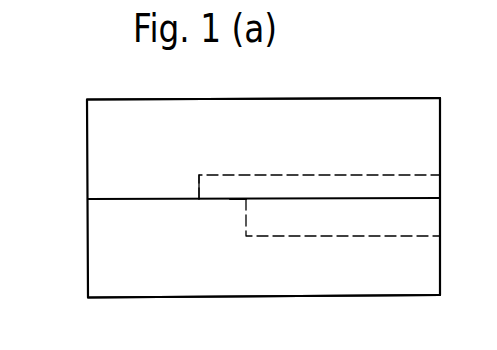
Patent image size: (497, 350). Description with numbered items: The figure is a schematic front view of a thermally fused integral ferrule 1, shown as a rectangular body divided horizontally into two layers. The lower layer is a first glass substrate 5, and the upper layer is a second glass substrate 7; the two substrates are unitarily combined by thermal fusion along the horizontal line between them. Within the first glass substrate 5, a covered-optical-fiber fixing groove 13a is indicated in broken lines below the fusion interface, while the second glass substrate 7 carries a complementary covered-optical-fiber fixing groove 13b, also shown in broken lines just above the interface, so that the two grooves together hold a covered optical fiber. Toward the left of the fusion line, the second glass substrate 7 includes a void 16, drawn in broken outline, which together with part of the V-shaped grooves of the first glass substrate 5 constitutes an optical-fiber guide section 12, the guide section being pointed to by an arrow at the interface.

The thermally fused integral ferrule 1 is at (78, 119).
The first glass substrate 5 is at (94, 265).
The second glass substrate 7 is at (108, 110).
The optical-fiber guide section 12 is at (236, 190).
The covered-optical-fiber fixing groove 13a is at (423, 213).
The covered-optical-fiber fixing groove 13b is at (413, 184).
The void 16 is at (211, 183).